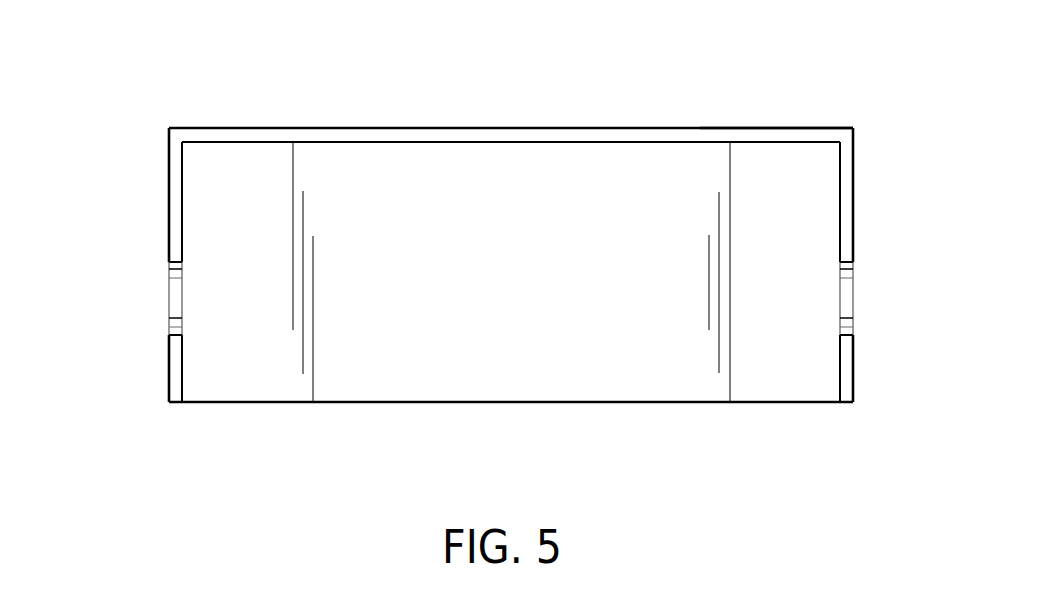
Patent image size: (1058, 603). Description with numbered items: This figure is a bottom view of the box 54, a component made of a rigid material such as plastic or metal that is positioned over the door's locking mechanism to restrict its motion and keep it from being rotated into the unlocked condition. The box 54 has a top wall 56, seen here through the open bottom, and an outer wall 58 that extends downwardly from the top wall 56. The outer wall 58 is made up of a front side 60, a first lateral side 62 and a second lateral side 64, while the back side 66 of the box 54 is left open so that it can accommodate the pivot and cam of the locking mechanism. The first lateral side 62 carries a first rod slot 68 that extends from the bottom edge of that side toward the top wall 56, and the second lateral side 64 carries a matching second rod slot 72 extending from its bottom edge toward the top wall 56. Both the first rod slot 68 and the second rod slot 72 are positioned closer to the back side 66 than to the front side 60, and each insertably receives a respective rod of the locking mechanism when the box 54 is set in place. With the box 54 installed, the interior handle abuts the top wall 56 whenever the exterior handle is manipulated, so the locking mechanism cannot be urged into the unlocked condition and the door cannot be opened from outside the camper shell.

The box 54 is at (501, 259).
The top wall 56 is at (458, 181).
The outer wall 58 is at (366, 128).
The front side 60 is at (747, 128).
The first lateral side 62 is at (169, 222).
The second lateral side 64 is at (853, 222).
The back side 66 is at (780, 402).
The first rod slot 68 is at (142, 294).
The second rod slot 72 is at (878, 303).